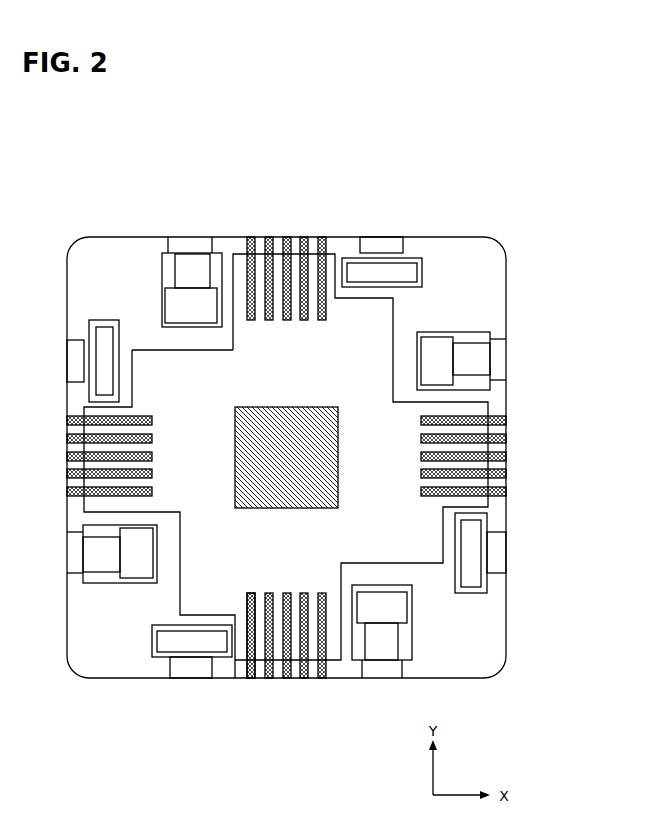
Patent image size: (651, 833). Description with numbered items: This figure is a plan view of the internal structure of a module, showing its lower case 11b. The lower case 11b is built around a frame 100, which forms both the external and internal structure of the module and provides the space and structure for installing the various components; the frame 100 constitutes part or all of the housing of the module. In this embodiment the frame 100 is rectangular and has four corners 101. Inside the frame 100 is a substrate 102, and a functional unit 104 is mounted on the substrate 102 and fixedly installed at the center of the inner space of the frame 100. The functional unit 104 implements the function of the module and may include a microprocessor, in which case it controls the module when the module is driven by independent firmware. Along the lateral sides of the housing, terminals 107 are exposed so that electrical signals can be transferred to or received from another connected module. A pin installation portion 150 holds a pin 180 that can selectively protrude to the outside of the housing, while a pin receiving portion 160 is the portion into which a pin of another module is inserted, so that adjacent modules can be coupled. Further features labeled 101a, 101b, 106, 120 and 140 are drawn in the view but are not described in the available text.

The frame 100 is at (108, 225).
The lower case 11b is at (298, 155).
The corners 101 is at (475, 262).
The housing side edge 101a is at (507, 272).
The housing top edge 101b is at (450, 234).
The substrate 102 is at (432, 547).
The functional unit 104 is at (305, 450).
The terminal fin 106 is at (250, 645).
The terminal 107 is at (265, 679).
The wiring pattern 120 is at (336, 268).
The component 140 is at (345, 258).
The pin installation portion 150 is at (468, 333).
The pin receiving portion 160 is at (403, 250).
The pin 180 is at (462, 357).